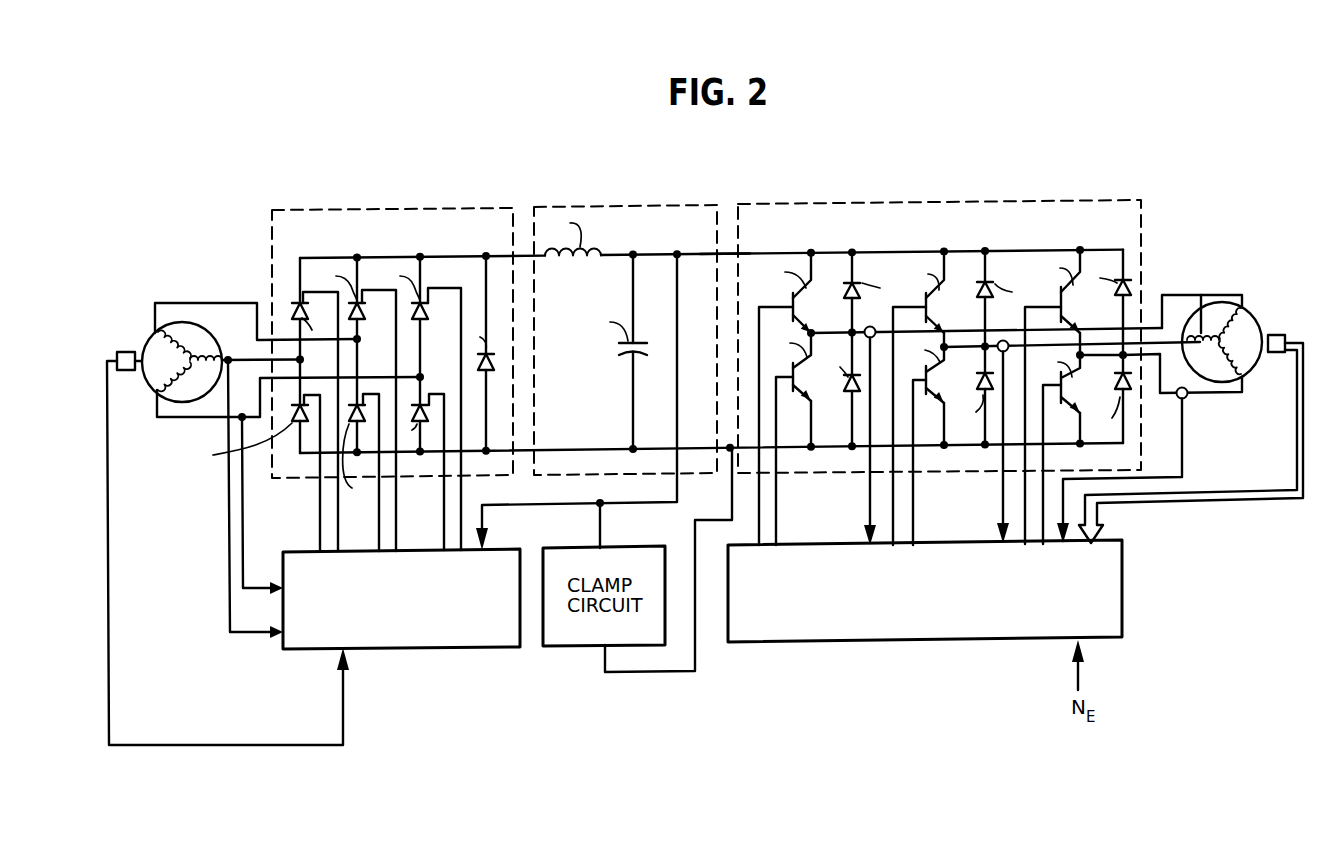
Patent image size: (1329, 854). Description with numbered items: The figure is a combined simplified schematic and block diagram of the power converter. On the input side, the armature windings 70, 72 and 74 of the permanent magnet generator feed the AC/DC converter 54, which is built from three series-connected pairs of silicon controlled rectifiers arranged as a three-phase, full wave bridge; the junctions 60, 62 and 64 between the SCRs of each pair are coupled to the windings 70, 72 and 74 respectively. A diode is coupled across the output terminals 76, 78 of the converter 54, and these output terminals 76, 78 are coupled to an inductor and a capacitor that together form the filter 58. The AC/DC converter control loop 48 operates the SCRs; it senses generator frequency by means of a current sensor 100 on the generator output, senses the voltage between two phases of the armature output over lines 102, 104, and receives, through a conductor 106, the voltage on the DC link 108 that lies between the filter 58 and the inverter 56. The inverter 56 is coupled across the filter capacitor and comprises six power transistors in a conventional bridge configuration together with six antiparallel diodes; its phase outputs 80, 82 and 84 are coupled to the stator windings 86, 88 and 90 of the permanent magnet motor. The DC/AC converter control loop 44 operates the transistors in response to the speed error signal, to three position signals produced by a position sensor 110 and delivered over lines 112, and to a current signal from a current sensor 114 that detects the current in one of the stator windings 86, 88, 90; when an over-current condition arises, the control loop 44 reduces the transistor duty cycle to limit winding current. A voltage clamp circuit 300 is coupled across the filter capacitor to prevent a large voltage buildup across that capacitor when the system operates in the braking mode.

The DC/AC converter control loop 44 is at (826, 641).
The AC/DC converter control loop 48 is at (436, 647).
The AC/DC converter 54 is at (420, 208).
The inverter 56 is at (878, 205).
The filter 58 is at (631, 212).
The junction 60 is at (303, 363).
The junction 62 is at (357, 341).
The junction 64 is at (421, 375).
The armature winding 70 is at (208, 333).
The armature winding 72 is at (153, 330).
The armature winding 74 is at (160, 400).
The output terminal 76 is at (497, 256).
The output terminal 78 is at (505, 472).
The phase output 80 is at (814, 331).
The phase output 82 is at (946, 349).
The phase output 84 is at (1081, 357).
The stator winding 86 is at (1218, 294).
The stator winding 88 is at (1212, 294).
The stator winding 90 is at (1245, 376).
The current sensor 100 is at (122, 350).
The line 102 is at (228, 503).
The line 104 is at (244, 505).
The conductor 106 is at (547, 507).
The DC link 108 is at (722, 256).
The position sensor 110 is at (1276, 334).
The lines 112 is at (1245, 497).
The current sensor 114 is at (1187, 398).
The voltage clamp circuit 300 is at (618, 547).